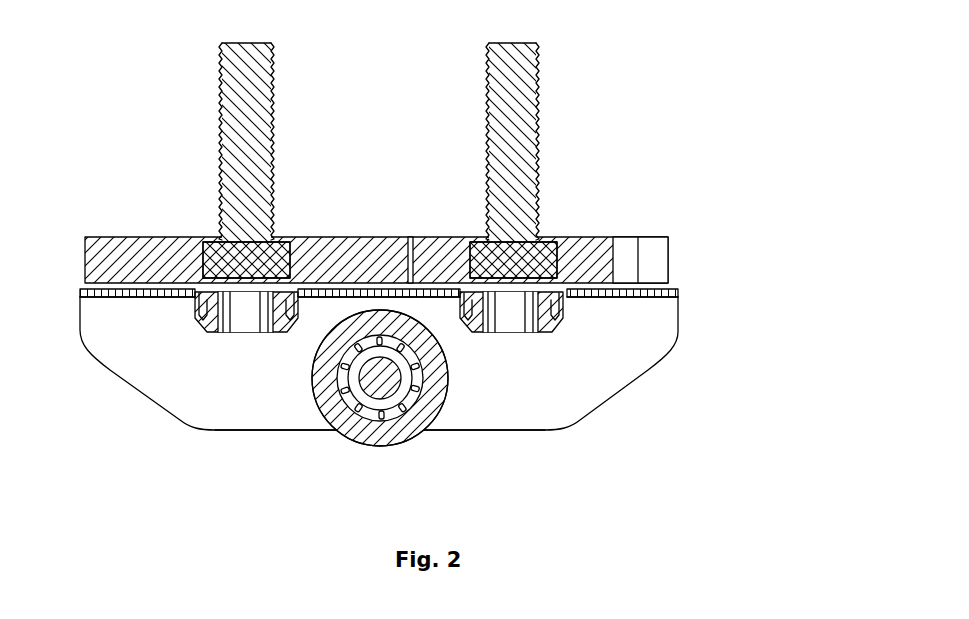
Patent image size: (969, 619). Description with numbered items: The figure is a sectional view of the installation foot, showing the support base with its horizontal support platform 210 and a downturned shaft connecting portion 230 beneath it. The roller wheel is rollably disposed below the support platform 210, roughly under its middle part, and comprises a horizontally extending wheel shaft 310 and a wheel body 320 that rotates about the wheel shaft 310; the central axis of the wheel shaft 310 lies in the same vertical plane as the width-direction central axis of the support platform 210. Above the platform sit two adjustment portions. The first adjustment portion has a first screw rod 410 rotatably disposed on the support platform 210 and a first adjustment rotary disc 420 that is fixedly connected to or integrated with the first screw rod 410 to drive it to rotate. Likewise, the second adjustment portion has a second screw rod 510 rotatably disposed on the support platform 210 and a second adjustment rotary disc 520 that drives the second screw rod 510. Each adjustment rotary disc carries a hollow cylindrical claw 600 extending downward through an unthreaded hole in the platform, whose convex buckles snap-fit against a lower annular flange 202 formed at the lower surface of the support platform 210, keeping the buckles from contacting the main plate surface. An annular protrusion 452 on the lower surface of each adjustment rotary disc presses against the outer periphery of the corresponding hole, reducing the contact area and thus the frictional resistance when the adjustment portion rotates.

The support platform 210 is at (583, 293).
The lower annular flange 202 is at (197, 307).
The shaft connecting portion 230 is at (297, 398).
The wheel shaft 310 is at (375, 385).
The wheel body 320 is at (408, 420).
The first screw rod 410 is at (258, 61).
The first adjustment rotary disc 420 is at (297, 250).
The annular protrusion 452 is at (190, 293).
The second screw rod 510 is at (520, 58).
The second adjustment rotary disc 520 is at (573, 243).
The claw 600 is at (254, 312).